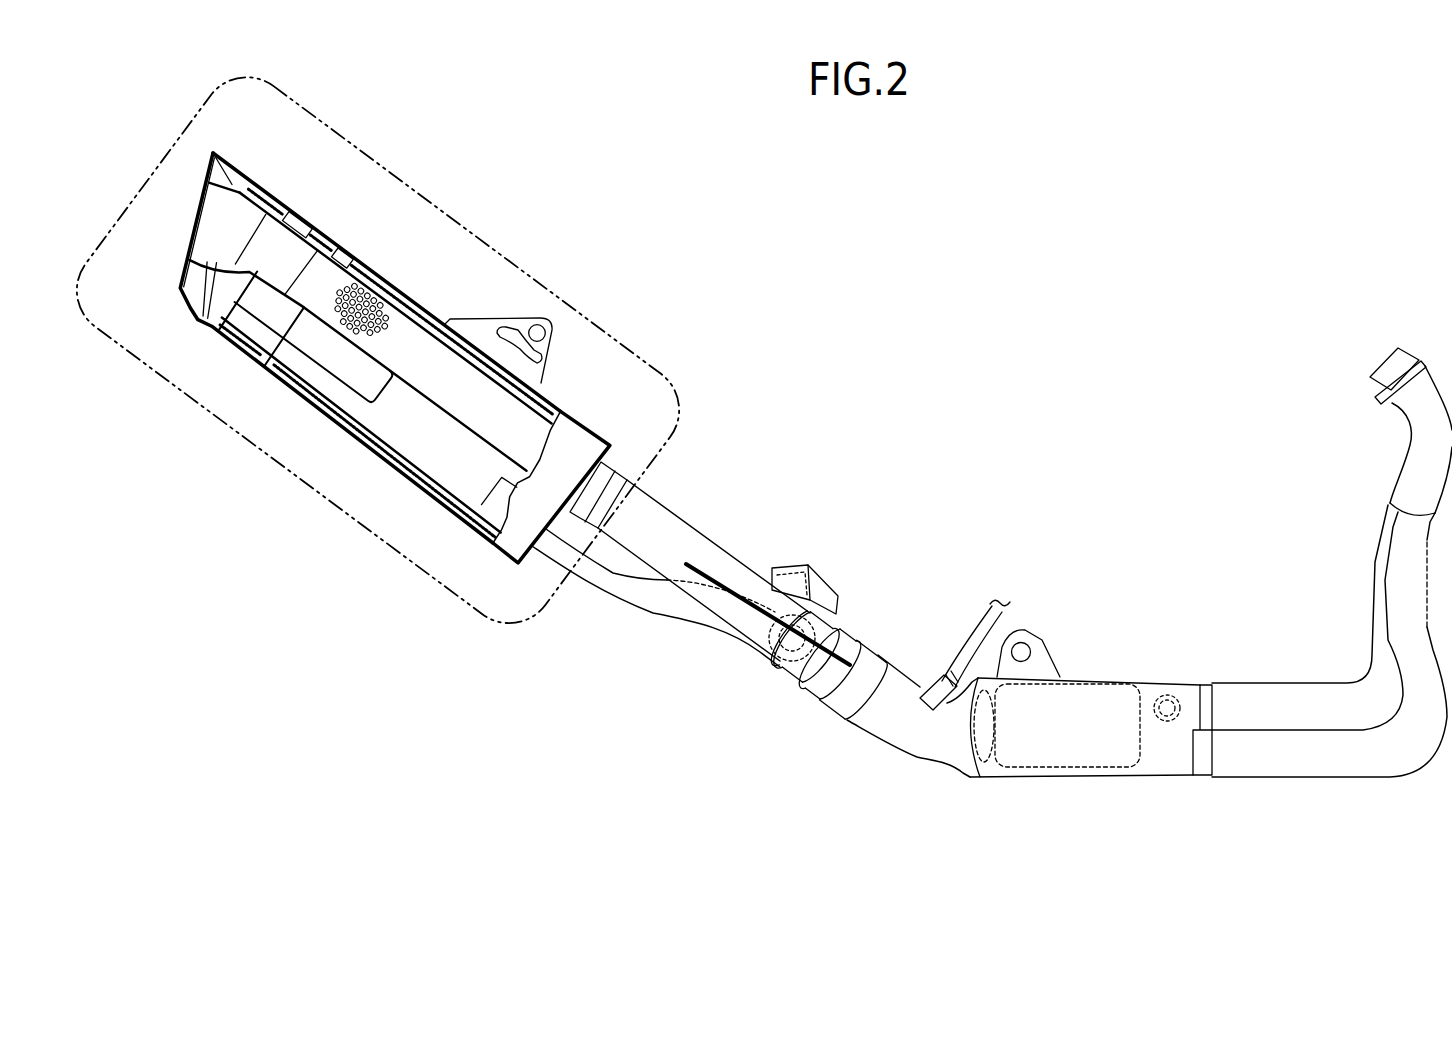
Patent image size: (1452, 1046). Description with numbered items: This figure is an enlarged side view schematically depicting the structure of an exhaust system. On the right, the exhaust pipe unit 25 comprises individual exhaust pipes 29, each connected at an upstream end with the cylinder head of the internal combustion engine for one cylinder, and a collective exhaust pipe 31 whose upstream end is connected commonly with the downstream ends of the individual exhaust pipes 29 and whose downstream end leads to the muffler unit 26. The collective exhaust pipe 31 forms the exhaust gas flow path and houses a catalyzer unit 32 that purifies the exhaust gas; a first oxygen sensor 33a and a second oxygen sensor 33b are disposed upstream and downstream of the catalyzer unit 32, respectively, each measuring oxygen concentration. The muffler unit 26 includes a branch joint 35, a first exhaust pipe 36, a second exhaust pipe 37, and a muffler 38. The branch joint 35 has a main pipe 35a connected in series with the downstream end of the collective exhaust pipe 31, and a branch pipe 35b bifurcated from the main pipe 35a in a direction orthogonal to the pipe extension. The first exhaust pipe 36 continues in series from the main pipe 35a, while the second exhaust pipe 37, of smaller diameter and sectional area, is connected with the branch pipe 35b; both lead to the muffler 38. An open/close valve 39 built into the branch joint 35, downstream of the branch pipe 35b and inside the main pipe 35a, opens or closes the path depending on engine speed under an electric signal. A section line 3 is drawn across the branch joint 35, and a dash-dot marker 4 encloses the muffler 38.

The section line III-III 3 is at (697, 560).
The region of FIG. 4 (muffler) 4 is at (530, 271).
The exhaust pipe unit 25 is at (928, 774).
The muffler unit 26 is at (461, 528).
The individual exhaust pipes 29 is at (1380, 607).
The collective exhaust pipe 31 is at (1130, 778).
The catalyzer unit 32 is at (1058, 773).
The first oxygen sensor 33a is at (1181, 697).
The second oxygen sensor 33b is at (936, 685).
The branch joint 35 is at (875, 645).
The main pipe 35a is at (820, 690).
The branch pipe 35b is at (816, 627).
The first exhaust pipe 36 is at (668, 512).
The second exhaust pipe 37 is at (678, 615).
The muffler 38 is at (573, 415).
The open/close valve 39 is at (796, 568).